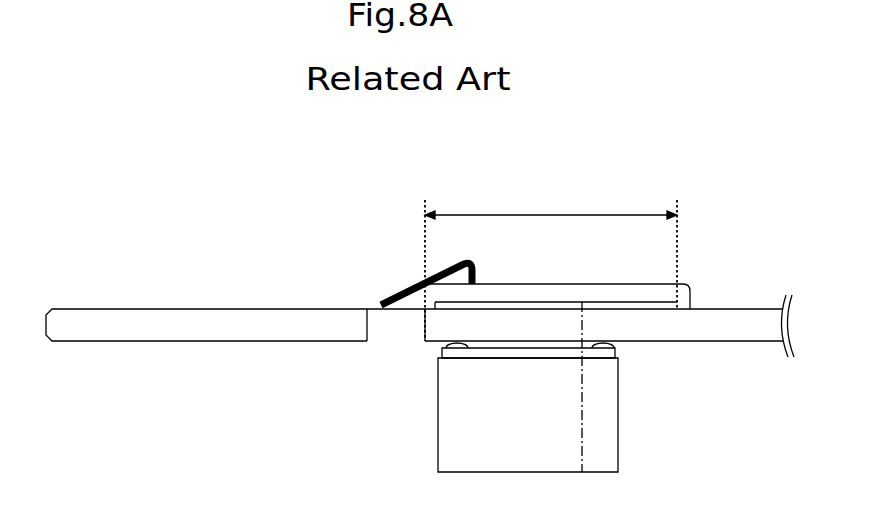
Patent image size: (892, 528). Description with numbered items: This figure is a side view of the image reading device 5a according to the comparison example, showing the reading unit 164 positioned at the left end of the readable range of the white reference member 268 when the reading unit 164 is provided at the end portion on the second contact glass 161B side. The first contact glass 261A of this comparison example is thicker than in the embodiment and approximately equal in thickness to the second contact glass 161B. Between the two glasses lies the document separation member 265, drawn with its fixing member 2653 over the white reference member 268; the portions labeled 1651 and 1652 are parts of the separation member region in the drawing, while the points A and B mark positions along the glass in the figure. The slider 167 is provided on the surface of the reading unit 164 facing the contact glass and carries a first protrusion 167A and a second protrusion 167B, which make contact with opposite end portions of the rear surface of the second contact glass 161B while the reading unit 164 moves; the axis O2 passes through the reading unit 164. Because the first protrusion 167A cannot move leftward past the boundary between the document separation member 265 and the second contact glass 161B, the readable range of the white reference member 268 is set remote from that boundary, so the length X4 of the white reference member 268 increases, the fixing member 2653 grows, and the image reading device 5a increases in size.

The first contact glass 261A is at (106, 314).
The connecting block 1651 is at (368, 312).
The second contact glass 161B is at (712, 314).
The document separation member 265 is at (386, 285).
The upper plate portion 1652 is at (447, 281).
The fixing member 2653 is at (715, 272).
The white reference member 268 is at (670, 305).
The length of the white reference member X4 is at (551, 266).
The image reading device 5a is at (584, 184).
The slider 167 is at (626, 355).
The first protrusion 167A is at (455, 352).
The second protrusion 167B is at (613, 355).
The reading unit 164 is at (453, 443).
The center axis O2 is at (583, 453).
The point A is at (365, 350).
The point B is at (424, 347).